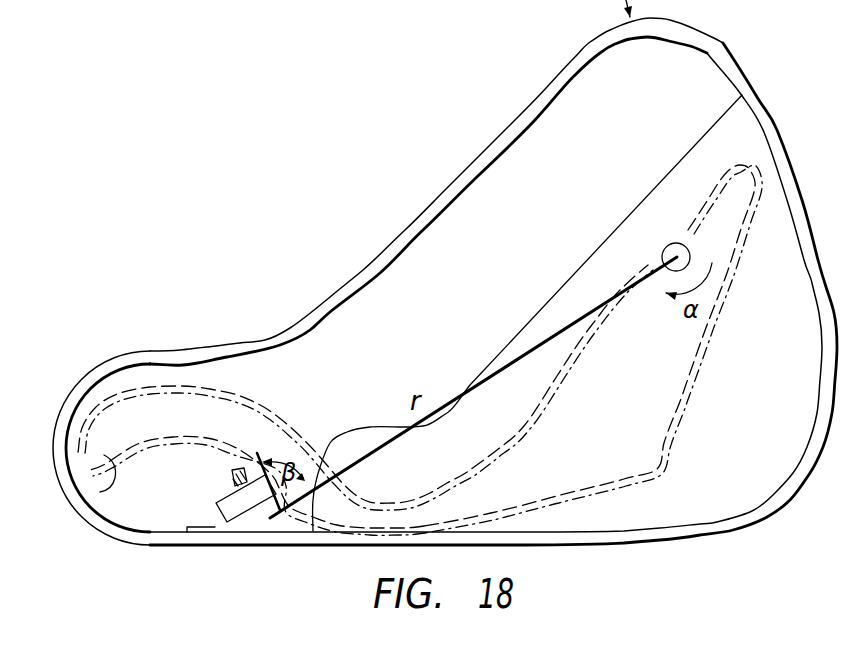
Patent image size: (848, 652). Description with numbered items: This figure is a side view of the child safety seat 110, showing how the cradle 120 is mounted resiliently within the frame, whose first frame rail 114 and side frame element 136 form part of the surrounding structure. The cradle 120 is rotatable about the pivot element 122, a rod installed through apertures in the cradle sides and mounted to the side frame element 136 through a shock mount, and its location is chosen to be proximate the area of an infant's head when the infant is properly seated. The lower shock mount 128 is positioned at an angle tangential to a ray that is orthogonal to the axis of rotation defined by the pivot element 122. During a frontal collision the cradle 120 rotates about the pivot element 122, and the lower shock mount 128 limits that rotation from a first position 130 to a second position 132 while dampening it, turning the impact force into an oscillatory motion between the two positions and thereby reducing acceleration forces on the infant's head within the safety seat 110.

The child safety seat 110 is at (217, 263).
The first frame rail 114 is at (700, 50).
The cradle 120 is at (725, 172).
The pivot element 122 is at (662, 257).
The lower shock mount 128 is at (216, 512).
The first position 130 is at (128, 398).
The second position 132 is at (110, 473).
The side frame element 136 is at (547, 302).